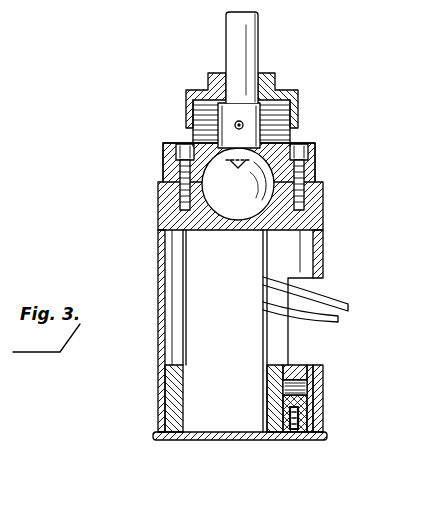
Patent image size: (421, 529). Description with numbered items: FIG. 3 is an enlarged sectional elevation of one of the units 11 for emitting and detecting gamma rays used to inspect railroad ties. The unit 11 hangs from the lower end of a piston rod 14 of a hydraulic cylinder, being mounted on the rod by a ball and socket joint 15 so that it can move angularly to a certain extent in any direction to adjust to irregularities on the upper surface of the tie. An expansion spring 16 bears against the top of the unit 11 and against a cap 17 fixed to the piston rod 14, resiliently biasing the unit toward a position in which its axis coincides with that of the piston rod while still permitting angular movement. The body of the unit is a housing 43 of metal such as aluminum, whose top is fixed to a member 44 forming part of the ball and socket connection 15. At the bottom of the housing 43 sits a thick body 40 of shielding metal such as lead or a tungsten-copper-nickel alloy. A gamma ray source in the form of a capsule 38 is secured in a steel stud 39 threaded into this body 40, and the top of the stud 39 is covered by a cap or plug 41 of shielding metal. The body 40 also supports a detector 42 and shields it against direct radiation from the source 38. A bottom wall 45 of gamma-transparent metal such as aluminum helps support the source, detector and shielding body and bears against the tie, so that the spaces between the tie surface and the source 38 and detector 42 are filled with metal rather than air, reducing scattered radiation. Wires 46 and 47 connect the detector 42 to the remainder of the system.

The unit 11 is at (160, 246).
The piston rod 14 is at (226, 36).
The ball and socket joint 15 is at (204, 160).
The expansion spring 16 is at (283, 93).
The cap 17 is at (186, 94).
The capsule 38 is at (322, 415).
The stud 39 is at (307, 390).
The body 40 is at (165, 402).
The cap or plug 41 is at (303, 366).
The detector 42 is at (229, 425).
The housing 43 is at (182, 349).
The member 44 is at (165, 216).
The wall 45 is at (197, 438).
The wire 46 is at (315, 299).
The wire 47 is at (325, 318).